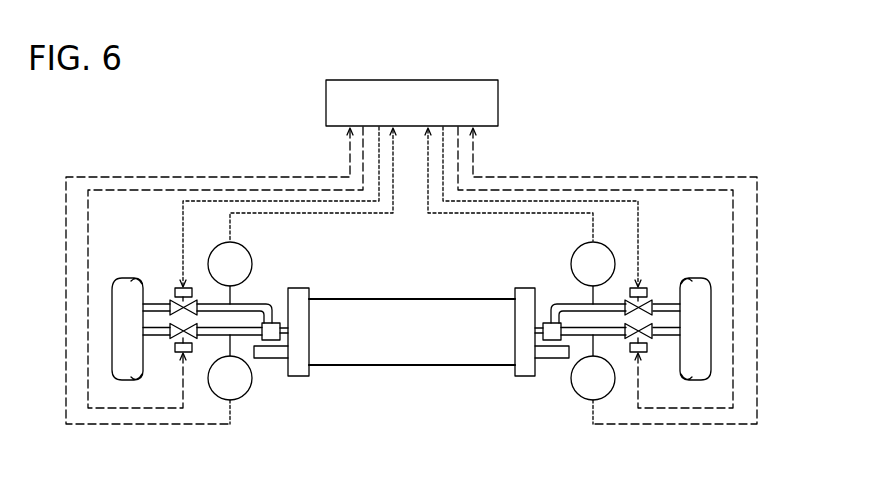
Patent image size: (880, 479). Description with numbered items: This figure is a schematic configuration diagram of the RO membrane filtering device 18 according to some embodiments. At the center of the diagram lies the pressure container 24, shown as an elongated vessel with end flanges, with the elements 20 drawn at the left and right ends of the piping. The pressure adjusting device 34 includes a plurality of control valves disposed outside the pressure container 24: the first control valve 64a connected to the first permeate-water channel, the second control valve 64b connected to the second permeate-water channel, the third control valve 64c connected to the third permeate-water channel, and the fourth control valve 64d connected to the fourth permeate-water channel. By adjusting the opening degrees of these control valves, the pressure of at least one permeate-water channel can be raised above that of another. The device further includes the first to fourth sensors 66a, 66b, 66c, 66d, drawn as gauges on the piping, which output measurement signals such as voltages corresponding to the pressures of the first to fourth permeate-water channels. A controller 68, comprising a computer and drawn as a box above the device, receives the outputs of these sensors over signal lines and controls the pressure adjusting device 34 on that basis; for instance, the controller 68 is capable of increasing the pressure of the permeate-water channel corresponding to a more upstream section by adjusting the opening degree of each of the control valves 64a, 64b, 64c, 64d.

The RO membrane filtering device 18 is at (637, 61).
The tire 20 is at (120, 278).
The pressure container 24 is at (405, 298).
The pressure adjusting device 34 is at (674, 228).
The first control valve 64a is at (175, 284).
The second control valve 64b is at (181, 354).
The third control valve 64c is at (641, 354).
The fourth control valve 64d is at (646, 285).
The first sensor 66a is at (251, 258).
The second sensor 66b is at (246, 393).
The third sensor 66c is at (577, 393).
The fourth sensor 66d is at (572, 256).
The controller 68 is at (498, 80).